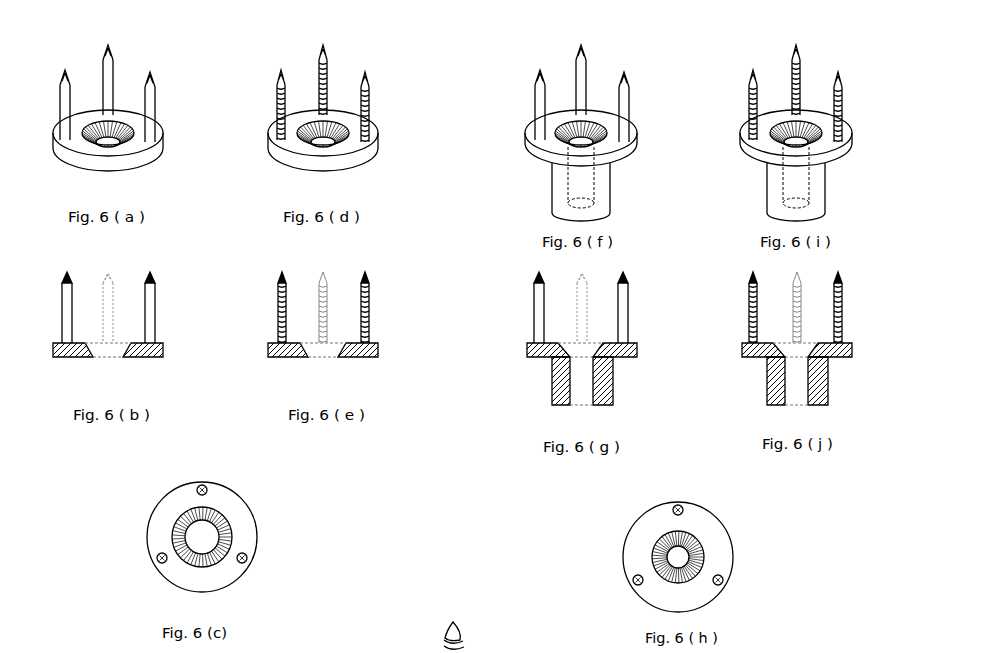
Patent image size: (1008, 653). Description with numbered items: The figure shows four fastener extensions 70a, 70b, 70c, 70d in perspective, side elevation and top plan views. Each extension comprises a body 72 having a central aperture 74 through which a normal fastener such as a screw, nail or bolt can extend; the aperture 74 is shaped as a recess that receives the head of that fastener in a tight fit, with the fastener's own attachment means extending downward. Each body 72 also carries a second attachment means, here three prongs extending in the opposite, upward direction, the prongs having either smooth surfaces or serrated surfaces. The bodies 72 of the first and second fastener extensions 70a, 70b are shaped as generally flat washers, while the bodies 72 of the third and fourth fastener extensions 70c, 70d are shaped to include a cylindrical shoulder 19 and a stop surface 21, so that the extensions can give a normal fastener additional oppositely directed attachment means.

In FIG. 6A, the first fastener extension 70a is at (92, 51).
In FIG. 6D, the second fastener extension 70b is at (308, 51).
In FIG. 6F, the third fastener extension 70c is at (564, 51).
In FIG. 6I, the fourth fastener extension 70d is at (781, 51).
In FIG. 6A, the body 72 is at (42, 157).
In FIG. 6D, the body 72 is at (335, 144).
In FIG. 6F, the body 72 is at (570, 146).
In FIG. 6I, the body 72 is at (785, 146).
In FIG. 6B, the body 72 is at (55, 348).
In FIG. 6E, the body 72 is at (339, 350).
In FIG. 6G, the body 72 is at (598, 350).
In FIG. 6J, the body 72 is at (813, 350).
In FIG. 6C, the body 72 is at (229, 537).
In FIG. 6H, the body 72 is at (696, 557).
In FIG. 6A, the central aperture 74 is at (109, 160).
In FIG. 6D, the central aperture 74 is at (324, 160).
In FIG. 6F, the central aperture 74 is at (582, 138).
In FIG. 6I, the central aperture 74 is at (797, 138).
In FIG. 6B, the central aperture 74 is at (108, 365).
In FIG. 6E, the central aperture 74 is at (323, 365).
In FIG. 6G, the central aperture 74 is at (580, 387).
In FIG. 6J, the central aperture 74 is at (795, 385).
In FIG. 6C, the central aperture 74 is at (179, 526).
In FIG. 6H, the central aperture 74 is at (659, 544).
In FIG. 6F, the cylindrical shoulder 19 is at (600, 192).
In FIG. 6I, the cylindrical shoulder 19 is at (815, 192).
In FIG. 6G, the cylindrical shoulder 19 is at (599, 381).
In FIG. 6J, the cylindrical shoulder 19 is at (814, 381).
In FIG. 6G, the stop surface 21 is at (600, 417).
In FIG. 6J, the stop surface 21 is at (815, 417).